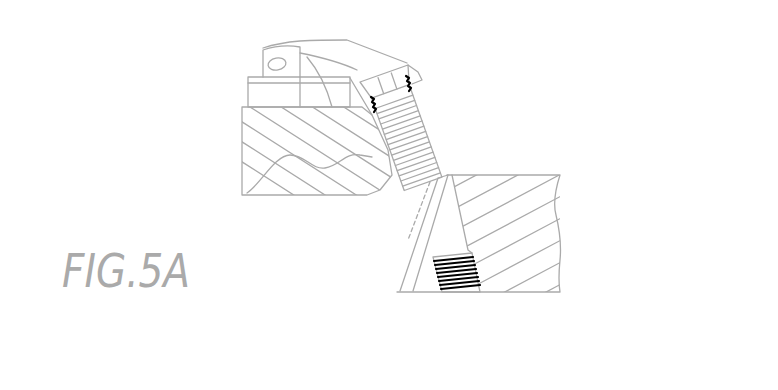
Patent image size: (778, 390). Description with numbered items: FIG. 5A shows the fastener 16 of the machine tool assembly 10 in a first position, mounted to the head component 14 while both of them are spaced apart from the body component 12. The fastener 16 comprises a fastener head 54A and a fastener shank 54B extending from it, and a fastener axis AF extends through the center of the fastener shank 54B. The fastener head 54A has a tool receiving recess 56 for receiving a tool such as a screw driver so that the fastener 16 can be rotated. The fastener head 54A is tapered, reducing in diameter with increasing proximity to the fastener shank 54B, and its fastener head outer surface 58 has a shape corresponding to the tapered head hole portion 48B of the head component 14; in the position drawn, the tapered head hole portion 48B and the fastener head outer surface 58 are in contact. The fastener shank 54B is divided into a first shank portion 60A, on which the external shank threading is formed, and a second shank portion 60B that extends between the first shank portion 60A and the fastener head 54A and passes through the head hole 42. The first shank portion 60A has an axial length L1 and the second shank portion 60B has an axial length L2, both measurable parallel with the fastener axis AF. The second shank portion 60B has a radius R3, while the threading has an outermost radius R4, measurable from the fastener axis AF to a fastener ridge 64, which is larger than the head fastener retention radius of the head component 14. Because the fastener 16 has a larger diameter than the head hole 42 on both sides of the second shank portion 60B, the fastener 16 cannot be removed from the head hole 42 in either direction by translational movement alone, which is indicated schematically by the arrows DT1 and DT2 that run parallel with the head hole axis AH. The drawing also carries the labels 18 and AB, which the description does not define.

The machine tool assembly 10 is at (572, 12).
The body component 12 is at (507, 152).
The head component 14 is at (250, 230).
The fastener 16 is at (375, 193).
The shank 18 is at (627, 384).
The head hole 42 is at (362, 46).
The tapered head hole portion 48B is at (281, 61).
The fastener head 54A is at (432, 58).
The fastener shank 54B is at (407, 217).
The tool receiving recess 56 is at (378, 60).
The fastener head outer surface 58 is at (263, 48).
The first shank portion 60A is at (372, 158).
The second shank portion 60B is at (242, 180).
The fastener ridge 64 is at (361, 216).
The axial length of first shank portion L1 is at (423, 82).
The axial length of second shank portion L2 is at (462, 168).
The radius of second shank portion R3 is at (433, 193).
The outermost radius of external arrangement R4 is at (447, 210).
The translational movement arrow DT1 is at (457, 372).
The translational movement arrow DT2 is at (438, 348).
The head hole axis AH is at (467, 302).
The bore axis AB is at (521, 324).
The fastener axis AF is at (557, 324).